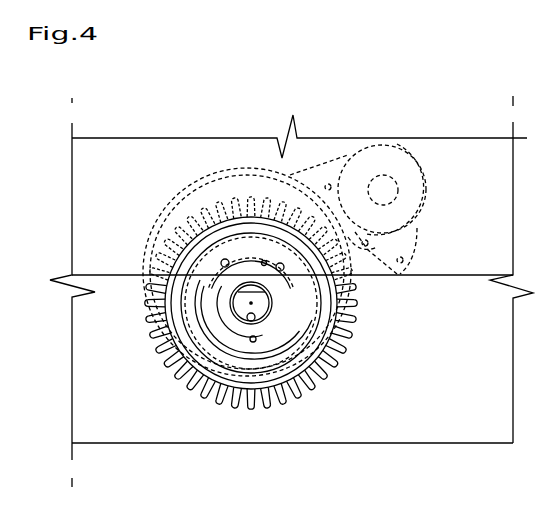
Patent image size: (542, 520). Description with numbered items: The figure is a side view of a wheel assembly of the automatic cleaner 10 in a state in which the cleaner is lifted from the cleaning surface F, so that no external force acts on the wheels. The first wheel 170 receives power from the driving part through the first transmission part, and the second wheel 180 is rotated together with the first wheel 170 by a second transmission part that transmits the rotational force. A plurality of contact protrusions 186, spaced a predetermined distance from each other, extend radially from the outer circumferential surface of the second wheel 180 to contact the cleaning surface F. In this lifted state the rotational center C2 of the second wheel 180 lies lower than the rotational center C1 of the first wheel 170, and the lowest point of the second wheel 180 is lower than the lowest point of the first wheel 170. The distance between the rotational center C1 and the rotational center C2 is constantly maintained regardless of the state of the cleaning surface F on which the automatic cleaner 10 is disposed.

The automatic cleaner 10 is at (455, 147).
The first wheel 170 is at (200, 180).
The second wheel 180 is at (209, 403).
The contact protrusions 186 is at (310, 396).
The rotational center of the first wheel C1 is at (264, 262).
The rotational center of the second wheel C2 is at (251, 321).
The cleaning surface F is at (377, 445).